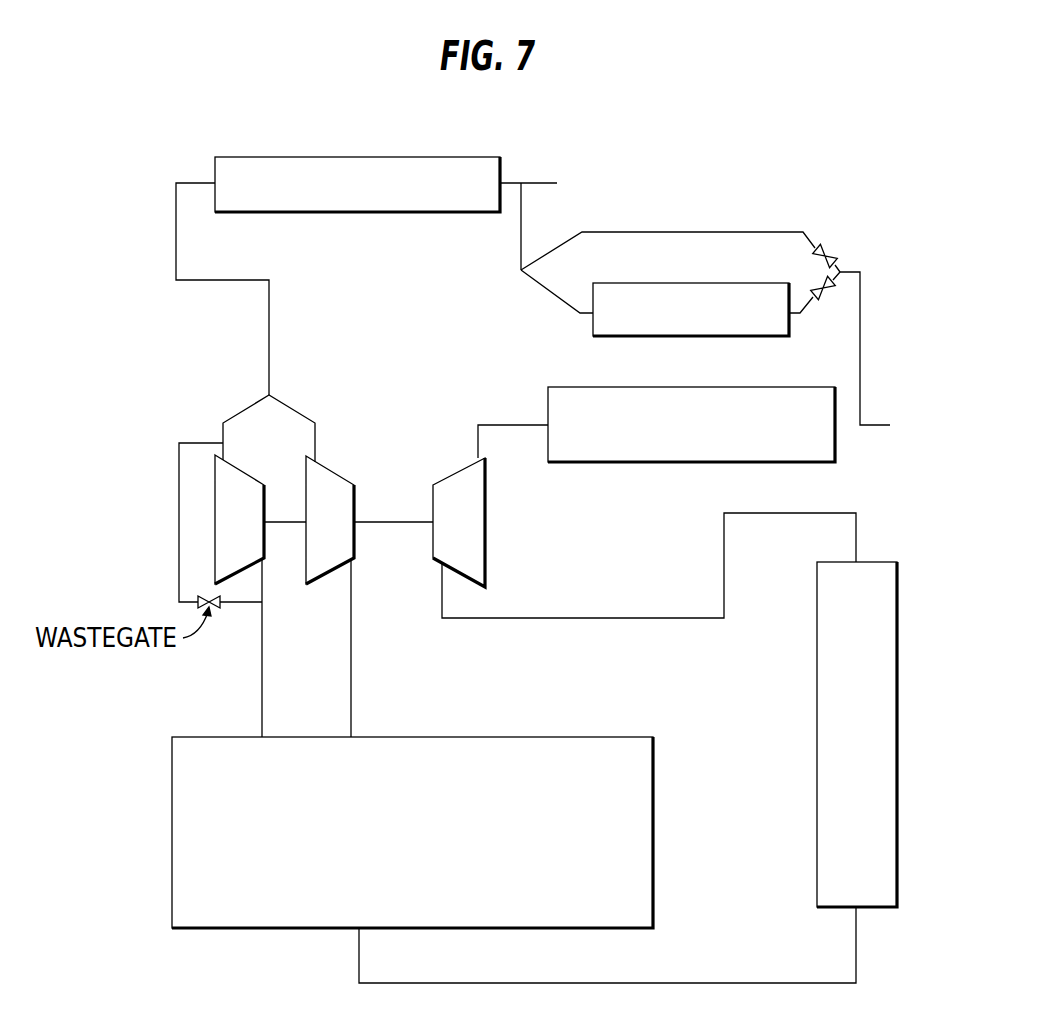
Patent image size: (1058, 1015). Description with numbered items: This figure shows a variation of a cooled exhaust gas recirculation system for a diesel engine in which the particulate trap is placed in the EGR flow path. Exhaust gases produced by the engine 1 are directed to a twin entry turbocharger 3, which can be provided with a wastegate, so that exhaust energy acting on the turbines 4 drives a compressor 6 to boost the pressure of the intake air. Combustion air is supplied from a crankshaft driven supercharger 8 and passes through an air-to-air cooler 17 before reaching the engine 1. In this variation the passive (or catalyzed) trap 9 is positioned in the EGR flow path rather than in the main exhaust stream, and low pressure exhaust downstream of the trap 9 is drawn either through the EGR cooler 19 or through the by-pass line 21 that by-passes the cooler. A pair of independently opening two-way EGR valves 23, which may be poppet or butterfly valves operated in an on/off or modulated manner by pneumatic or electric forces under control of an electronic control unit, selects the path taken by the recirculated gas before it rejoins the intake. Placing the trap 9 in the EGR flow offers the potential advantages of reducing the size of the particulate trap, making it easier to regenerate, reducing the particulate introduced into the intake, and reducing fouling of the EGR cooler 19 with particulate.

The engine 1 is at (433, 737).
The twin entry turbocharger 3 is at (289, 590).
The turbines 4 is at (305, 488).
The compressor 6 is at (486, 519).
The crankshaft driven supercharger 8 is at (790, 387).
The passive trap 9 is at (452, 157).
The air-to-air cooler 17 is at (870, 562).
The EGR cooler 19 is at (710, 283).
The by-pass line 21 is at (582, 232).
The two-way EGR valves 23 is at (823, 284).